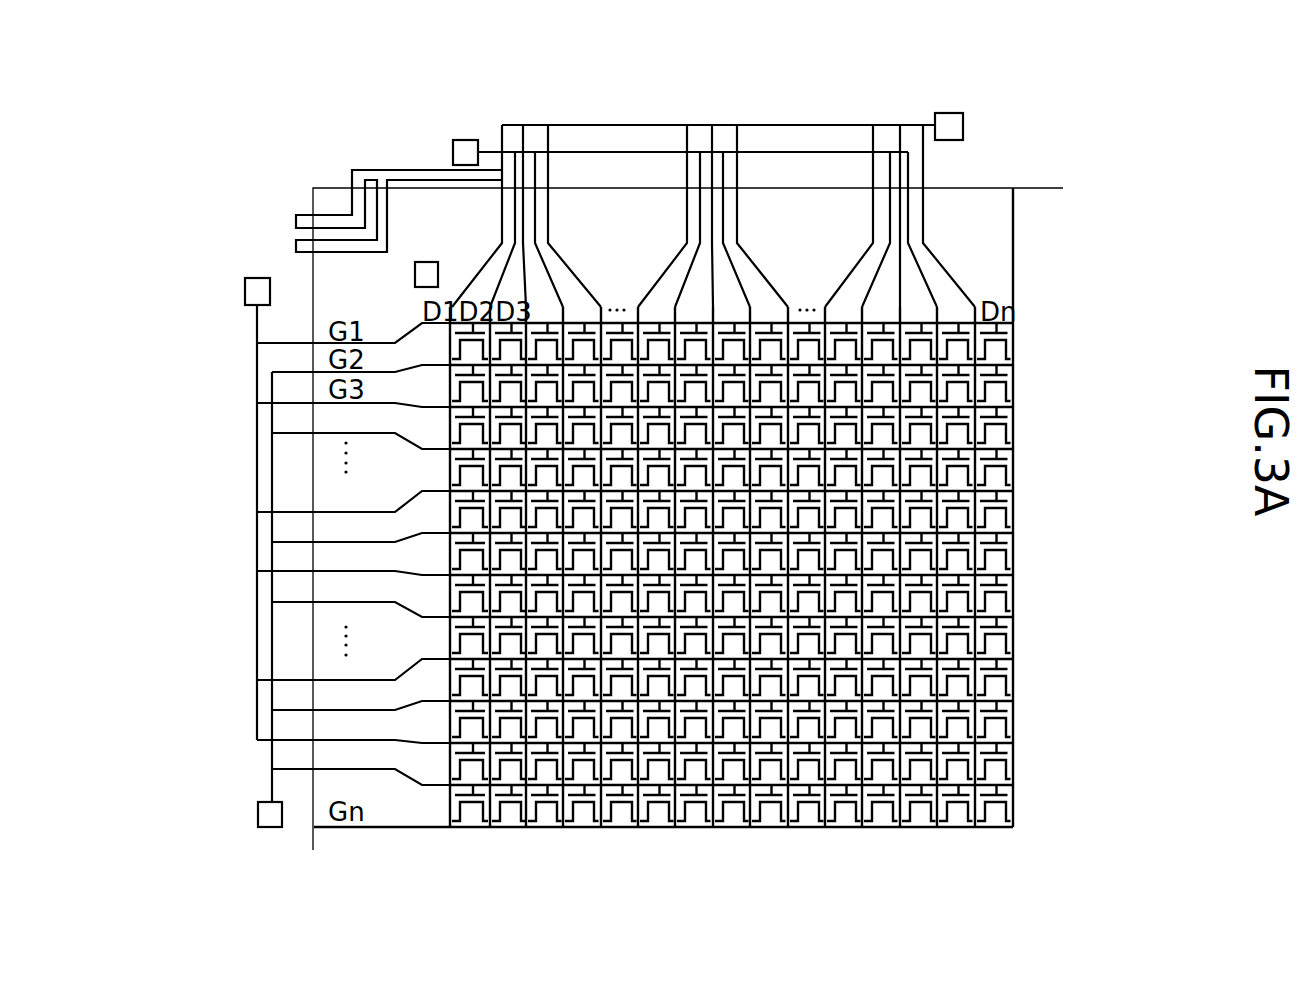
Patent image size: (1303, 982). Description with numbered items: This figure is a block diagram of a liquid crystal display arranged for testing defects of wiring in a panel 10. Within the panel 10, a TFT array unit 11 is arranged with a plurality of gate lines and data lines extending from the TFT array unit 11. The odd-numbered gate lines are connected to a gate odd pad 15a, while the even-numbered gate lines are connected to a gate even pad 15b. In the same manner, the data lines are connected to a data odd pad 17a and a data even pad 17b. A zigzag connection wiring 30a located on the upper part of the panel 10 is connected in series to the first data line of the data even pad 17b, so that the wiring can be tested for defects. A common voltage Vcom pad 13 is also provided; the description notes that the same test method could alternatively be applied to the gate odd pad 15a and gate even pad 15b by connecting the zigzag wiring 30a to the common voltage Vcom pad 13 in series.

The panel 10 is at (320, 285).
The TFT array unit 11 is at (873, 540).
The common voltage Vcom pad 13 is at (427, 262).
The gate odd pad 15a is at (257, 288).
The gate even pad 15b is at (262, 813).
The data odd pad 17a is at (947, 126).
The data even pad 17b is at (463, 150).
The zigzag connection wiring 30a is at (348, 168).